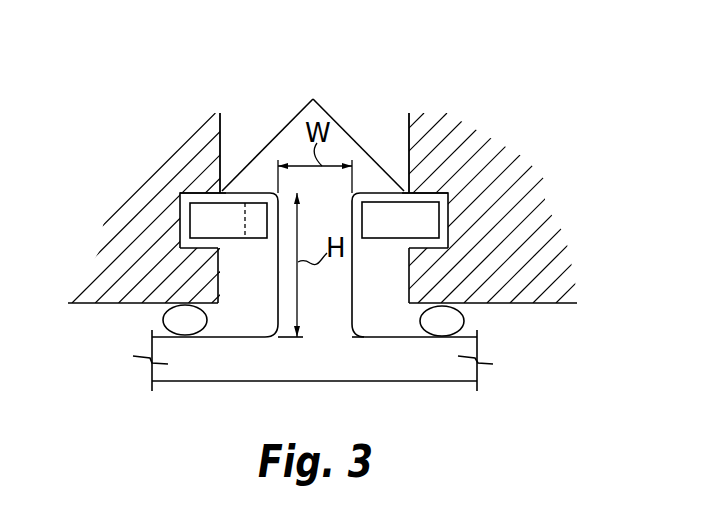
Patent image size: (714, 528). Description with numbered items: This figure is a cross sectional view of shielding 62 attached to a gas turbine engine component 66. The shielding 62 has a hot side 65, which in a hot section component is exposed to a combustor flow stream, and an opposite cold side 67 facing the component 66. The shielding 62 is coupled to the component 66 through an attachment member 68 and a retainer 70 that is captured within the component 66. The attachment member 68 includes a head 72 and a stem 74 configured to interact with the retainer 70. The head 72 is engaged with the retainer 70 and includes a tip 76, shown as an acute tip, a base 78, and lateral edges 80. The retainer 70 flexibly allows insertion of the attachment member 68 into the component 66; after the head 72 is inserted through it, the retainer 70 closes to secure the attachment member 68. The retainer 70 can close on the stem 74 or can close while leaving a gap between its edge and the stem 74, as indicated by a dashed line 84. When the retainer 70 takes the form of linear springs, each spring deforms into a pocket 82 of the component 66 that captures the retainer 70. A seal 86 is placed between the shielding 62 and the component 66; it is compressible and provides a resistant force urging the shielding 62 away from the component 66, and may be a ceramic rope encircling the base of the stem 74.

The shielding 62 is at (387, 382).
The hot side 65 is at (203, 382).
The component 66 is at (470, 153).
The cold side 67 is at (479, 334).
The attachment member 68 is at (364, 78).
The retainer 70 is at (198, 200).
The head 72 is at (287, 126).
The stem 74 is at (278, 300).
The tip 76 is at (313, 99).
The base 78 is at (368, 190).
The lateral edges 80 is at (227, 191).
The pocket 82 is at (450, 218).
The dashed line 84 is at (245, 215).
The seal 86 is at (164, 312).